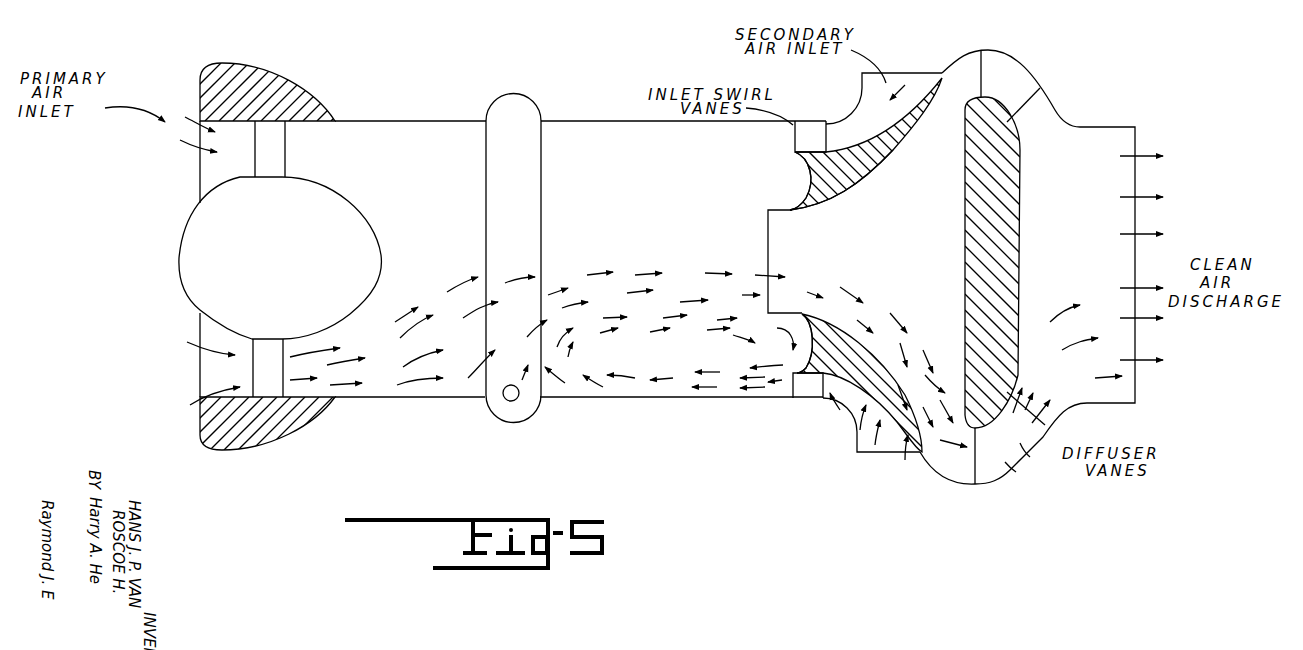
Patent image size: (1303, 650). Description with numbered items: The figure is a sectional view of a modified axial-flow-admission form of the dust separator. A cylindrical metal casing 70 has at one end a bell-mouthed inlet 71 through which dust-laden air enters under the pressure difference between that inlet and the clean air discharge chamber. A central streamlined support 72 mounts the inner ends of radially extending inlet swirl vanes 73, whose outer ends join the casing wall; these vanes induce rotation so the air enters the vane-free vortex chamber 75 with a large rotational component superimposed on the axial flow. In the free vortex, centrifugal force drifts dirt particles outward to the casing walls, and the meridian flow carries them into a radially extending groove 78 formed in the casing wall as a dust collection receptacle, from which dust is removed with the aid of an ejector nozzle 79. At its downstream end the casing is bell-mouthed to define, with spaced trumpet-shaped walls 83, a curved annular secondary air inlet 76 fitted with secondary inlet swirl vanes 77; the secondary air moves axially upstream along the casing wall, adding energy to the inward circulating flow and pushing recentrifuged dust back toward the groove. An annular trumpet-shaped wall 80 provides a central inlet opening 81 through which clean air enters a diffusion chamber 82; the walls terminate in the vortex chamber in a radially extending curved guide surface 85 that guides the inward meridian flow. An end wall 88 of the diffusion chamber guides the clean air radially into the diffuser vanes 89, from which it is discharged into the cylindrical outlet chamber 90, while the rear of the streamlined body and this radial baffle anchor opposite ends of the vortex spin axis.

The cylindrical metal casing 70 is at (414, 121).
The bell-mouthed inlet 71 is at (200, 173).
The central streamlined support 72 is at (276, 242).
The inlet swirl vanes 73 is at (276, 157).
The vane-free vortex chamber 75 is at (426, 180).
The curved annular secondary air inlet 76 is at (917, 76).
The secondary inlet swirl vanes 77 is at (797, 146).
The radially extending groove 78 is at (522, 92).
The ejector nozzle 79 is at (520, 399).
The annular trumpet-shaped wall 80 is at (833, 208).
The central inlet opening 81 is at (782, 235).
The diffusion chamber 82 is at (931, 211).
The trumpet-shaped walls 83 is at (868, 140).
The radially extending curved guide surface 85 is at (800, 187).
The end wall 88 is at (1020, 257).
The diffuser vanes 89 is at (1017, 71).
The cylindrical outlet chamber 90 is at (1094, 214).